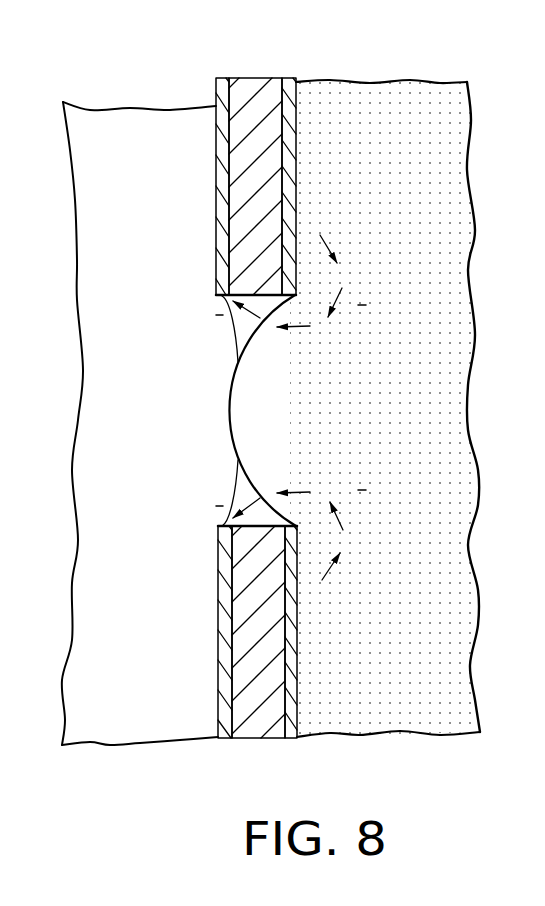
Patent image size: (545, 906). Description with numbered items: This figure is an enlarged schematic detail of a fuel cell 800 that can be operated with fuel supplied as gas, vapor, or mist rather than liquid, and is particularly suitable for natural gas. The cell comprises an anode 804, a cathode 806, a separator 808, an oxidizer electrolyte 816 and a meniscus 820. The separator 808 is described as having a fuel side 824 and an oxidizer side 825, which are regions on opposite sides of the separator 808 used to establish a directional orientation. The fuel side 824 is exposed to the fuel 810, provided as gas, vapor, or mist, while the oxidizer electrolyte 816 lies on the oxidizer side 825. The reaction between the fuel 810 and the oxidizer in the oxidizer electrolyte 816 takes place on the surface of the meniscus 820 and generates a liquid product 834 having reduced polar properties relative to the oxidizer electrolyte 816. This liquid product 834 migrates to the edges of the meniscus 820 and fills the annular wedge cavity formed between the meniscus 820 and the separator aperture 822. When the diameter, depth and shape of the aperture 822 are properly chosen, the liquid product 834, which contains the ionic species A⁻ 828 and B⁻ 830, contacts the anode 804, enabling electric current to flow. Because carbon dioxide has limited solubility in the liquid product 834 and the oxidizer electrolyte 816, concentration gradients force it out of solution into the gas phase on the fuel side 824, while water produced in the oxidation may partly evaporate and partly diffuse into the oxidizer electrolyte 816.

The fuel cell 800 is at (167, 762).
The anode 804 is at (216, 150).
The cathode 806 is at (297, 110).
The separator 808 is at (253, 78).
The fuel 810 is at (122, 432).
The oxidizer electrolyte 816 is at (401, 652).
The meniscus 820 is at (229, 393).
The separator aperture 822 is at (187, 428).
The fuel side 824 is at (196, 219).
The oxidizer side 825 is at (401, 161).
The ionic species A⁻ 828 is at (365, 318).
The ionic species B⁻ 830 is at (196, 322).
The liquid product 834 is at (240, 325).